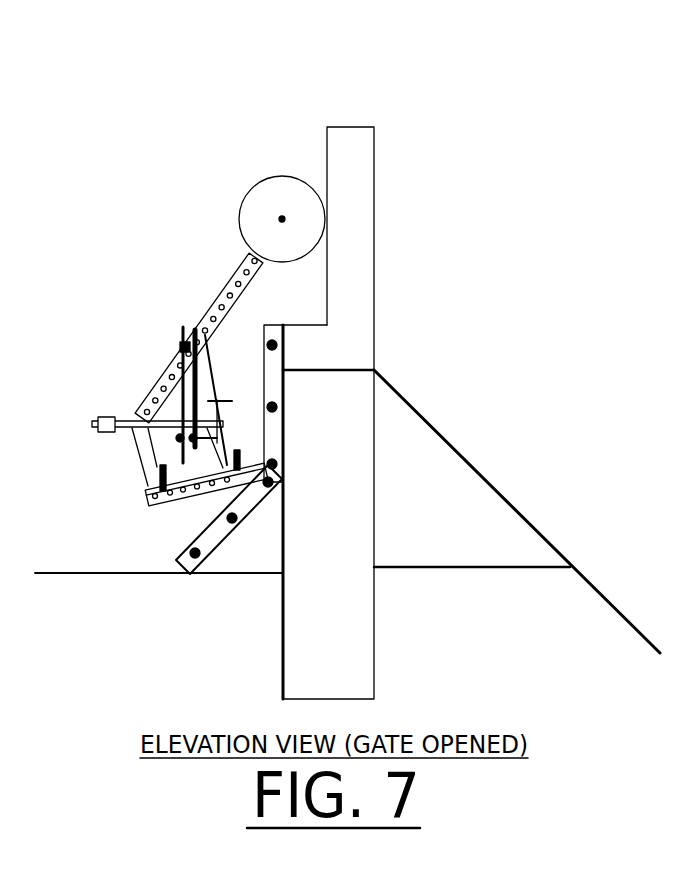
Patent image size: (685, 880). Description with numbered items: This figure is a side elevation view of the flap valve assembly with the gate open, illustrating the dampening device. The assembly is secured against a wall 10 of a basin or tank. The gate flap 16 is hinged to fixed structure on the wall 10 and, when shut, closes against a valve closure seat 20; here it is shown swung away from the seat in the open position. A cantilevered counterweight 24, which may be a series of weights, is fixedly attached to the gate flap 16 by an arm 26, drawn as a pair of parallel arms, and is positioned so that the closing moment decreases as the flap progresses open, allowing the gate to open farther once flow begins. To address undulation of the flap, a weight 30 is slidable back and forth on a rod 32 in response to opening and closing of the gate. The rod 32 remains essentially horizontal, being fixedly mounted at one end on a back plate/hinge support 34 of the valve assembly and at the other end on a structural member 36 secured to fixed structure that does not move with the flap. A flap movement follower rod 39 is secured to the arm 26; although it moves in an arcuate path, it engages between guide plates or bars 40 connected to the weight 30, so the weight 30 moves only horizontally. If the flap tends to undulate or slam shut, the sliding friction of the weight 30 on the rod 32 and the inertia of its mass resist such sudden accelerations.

The wall 10 is at (357, 127).
The counterweight 24 is at (302, 178).
The arm 26 is at (199, 315).
The weight 30 is at (203, 405).
The back plate/hinge support 34 is at (285, 392).
The structural member 36 is at (136, 396).
The guide plates or bars 40 is at (193, 329).
The flap movement follower rod 39 is at (182, 347).
The rod 32 is at (144, 465).
The gate flap 16 is at (178, 499).
The valve closure seat 20 is at (184, 522).